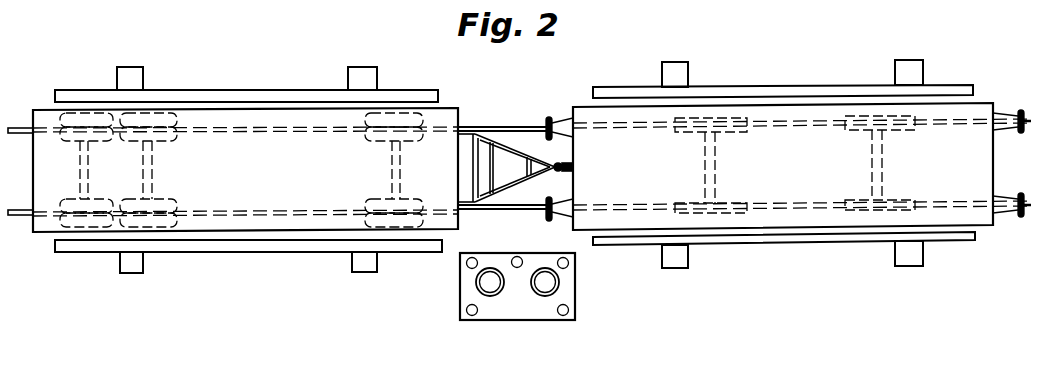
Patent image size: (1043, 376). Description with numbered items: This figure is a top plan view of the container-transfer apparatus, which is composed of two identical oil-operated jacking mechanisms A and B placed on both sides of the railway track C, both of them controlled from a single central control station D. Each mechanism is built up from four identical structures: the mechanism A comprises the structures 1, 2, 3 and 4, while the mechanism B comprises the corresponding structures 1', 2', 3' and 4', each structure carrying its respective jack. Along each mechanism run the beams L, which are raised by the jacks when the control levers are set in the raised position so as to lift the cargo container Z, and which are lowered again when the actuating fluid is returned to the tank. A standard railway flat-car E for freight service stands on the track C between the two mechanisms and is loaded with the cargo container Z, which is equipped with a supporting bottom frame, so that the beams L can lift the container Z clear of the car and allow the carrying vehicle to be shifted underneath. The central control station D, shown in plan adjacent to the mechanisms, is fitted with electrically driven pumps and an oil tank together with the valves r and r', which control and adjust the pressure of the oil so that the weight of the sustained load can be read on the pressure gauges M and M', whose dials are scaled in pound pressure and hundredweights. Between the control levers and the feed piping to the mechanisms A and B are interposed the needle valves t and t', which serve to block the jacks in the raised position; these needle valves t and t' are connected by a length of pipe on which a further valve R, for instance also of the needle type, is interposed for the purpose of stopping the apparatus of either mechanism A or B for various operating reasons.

The jack structure 1 is at (695, 271).
The jack structure 1' is at (344, 276).
The jack structure 2 is at (694, 49).
The jack structure 2' is at (383, 68).
The jack structure 3 is at (931, 59).
The jack structure 3' is at (151, 64).
The jack structure 4 is at (934, 268).
The jack structure 4' is at (153, 276).
The oil-operated jacking mechanism A is at (822, 270).
The oil-operated jacking mechanism B is at (278, 274).
The railway track C is at (18, 126).
The central control station D is at (484, 252).
The railway flat-car E is at (1020, 134).
The beams L is at (279, 90).
The pressure gauge M is at (582, 286).
The pressure gauge M' is at (443, 285).
The valve R is at (519, 257).
The cargo container Z is at (40, 236).
The valve r is at (589, 313).
The valve r' is at (447, 313).
The needle valve t is at (582, 263).
The needle valve t' is at (445, 263).